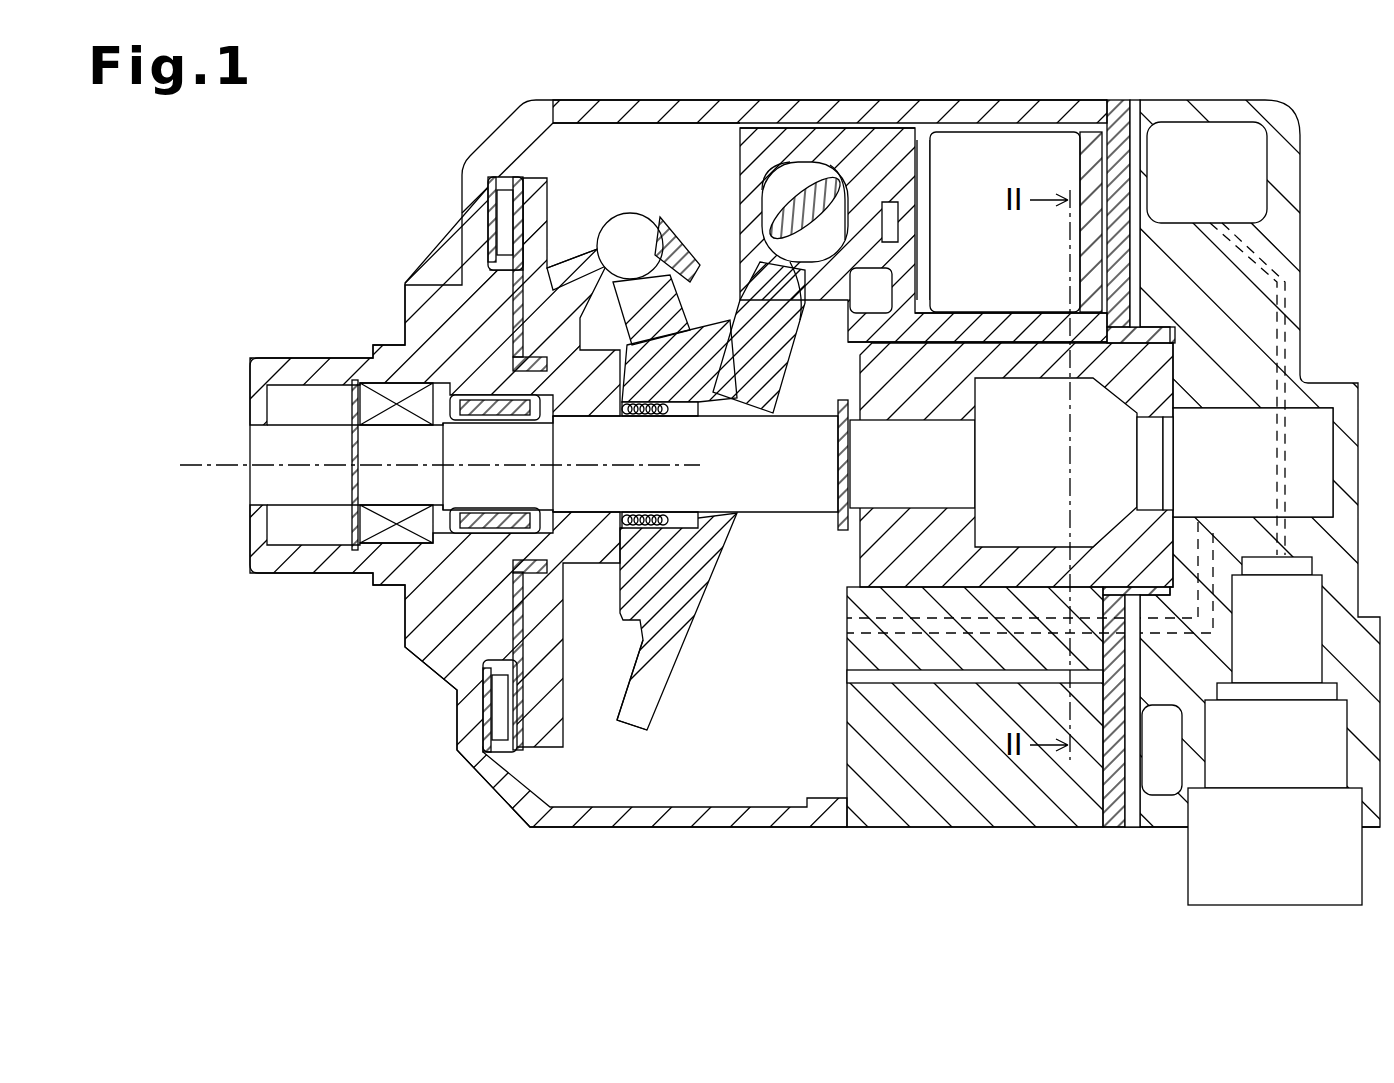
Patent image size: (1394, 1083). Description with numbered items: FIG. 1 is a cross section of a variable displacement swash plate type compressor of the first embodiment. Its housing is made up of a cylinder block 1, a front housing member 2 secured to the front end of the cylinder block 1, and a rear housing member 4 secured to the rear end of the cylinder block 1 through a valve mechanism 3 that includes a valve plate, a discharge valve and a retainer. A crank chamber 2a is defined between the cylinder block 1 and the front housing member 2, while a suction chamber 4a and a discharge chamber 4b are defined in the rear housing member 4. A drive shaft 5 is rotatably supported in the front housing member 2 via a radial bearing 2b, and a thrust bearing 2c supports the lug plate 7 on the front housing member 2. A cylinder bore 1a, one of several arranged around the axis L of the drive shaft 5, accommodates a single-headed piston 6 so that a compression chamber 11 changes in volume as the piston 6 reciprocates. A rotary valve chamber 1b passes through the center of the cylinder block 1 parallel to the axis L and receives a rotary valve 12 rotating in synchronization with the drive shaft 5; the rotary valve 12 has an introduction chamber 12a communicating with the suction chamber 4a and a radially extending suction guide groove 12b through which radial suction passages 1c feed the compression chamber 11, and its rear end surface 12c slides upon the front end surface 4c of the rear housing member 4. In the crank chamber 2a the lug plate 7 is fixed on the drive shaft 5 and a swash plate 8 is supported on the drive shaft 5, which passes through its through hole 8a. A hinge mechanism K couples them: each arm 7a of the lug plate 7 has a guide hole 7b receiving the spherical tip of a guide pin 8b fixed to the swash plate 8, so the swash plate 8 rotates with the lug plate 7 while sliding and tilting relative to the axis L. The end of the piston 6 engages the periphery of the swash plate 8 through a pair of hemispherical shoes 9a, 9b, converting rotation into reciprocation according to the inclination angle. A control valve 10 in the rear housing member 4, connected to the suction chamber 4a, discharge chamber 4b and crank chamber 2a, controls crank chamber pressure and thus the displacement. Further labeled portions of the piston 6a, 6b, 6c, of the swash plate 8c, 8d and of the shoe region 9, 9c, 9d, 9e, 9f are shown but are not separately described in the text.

The cylinder block 1 is at (930, 112).
The cylinder bore 1a is at (985, 140).
The rotary valve chamber 1b is at (845, 578).
The suction passage 1c is at (1048, 330).
The front housing member 2 is at (512, 136).
The crank chamber 2a is at (596, 166).
The radial bearing 2b is at (488, 410).
The thrust bearing 2c is at (500, 210).
The valve mechanism 3 is at (1130, 849).
The rear housing member 4 is at (1280, 235).
The suction chamber 4a is at (1260, 486).
The discharge chamber 4b is at (1238, 178).
The front end surface 4c is at (1175, 367).
The drive shaft 5 is at (772, 477).
The piston 6 is at (895, 145).
The pocket 6a is at (732, 224).
The bottom wall 6b is at (965, 325).
The top surface 6c is at (768, 125).
The lug plate 7 is at (555, 583).
The arm 7a is at (580, 283).
The guide hole 7b is at (672, 232).
The swash plate 8 is at (680, 595).
The through hole 8a is at (735, 520).
The guide pin 8b is at (673, 303).
The lever tip 8c is at (620, 710).
The lever lower arm 8d is at (660, 700).
The cam 9 is at (805, 212).
The hemispherical shoe 9a is at (760, 190).
The hemispherical shoe 9b is at (838, 195).
The cam arm 9c is at (773, 340).
The cam pivot 9d is at (805, 282).
The cam pin 9e is at (778, 220).
The cam edge 9f is at (858, 200).
The control valve 10 is at (1292, 642).
The compression chamber 11 is at (1112, 130).
The rotary valve 12 is at (945, 395).
The introduction chamber 12a is at (1052, 498).
The suction guide groove 12b is at (1093, 380).
The rear end surface 12c is at (1178, 410).
The hinge mechanism K is at (636, 196).
The axis L is at (215, 463).